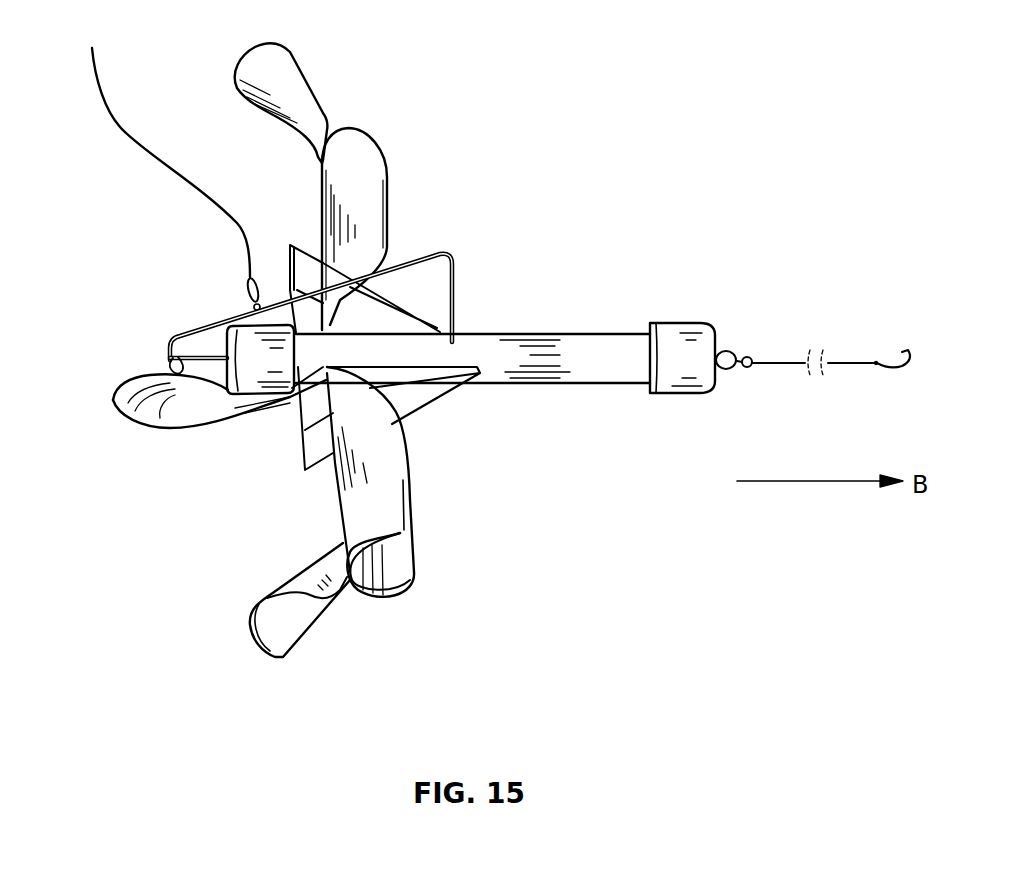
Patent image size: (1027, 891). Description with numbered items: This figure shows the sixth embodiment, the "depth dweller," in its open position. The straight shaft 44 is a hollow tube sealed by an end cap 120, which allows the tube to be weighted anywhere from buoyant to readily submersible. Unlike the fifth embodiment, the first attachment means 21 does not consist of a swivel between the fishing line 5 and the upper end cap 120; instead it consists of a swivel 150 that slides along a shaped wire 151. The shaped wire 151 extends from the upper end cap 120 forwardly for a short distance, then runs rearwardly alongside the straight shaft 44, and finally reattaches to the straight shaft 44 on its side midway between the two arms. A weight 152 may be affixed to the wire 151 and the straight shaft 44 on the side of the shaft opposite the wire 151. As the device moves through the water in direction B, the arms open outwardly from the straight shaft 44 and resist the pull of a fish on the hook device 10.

The fishing line 5 is at (190, 180).
The first attachment means 21 is at (148, 267).
The swivel 150 is at (247, 297).
The shaped wire 151 is at (417, 257).
The weight 152 is at (180, 402).
The end cap 120 is at (252, 360).
The straight shaft 44 is at (485, 355).
The hook device 10 is at (907, 350).